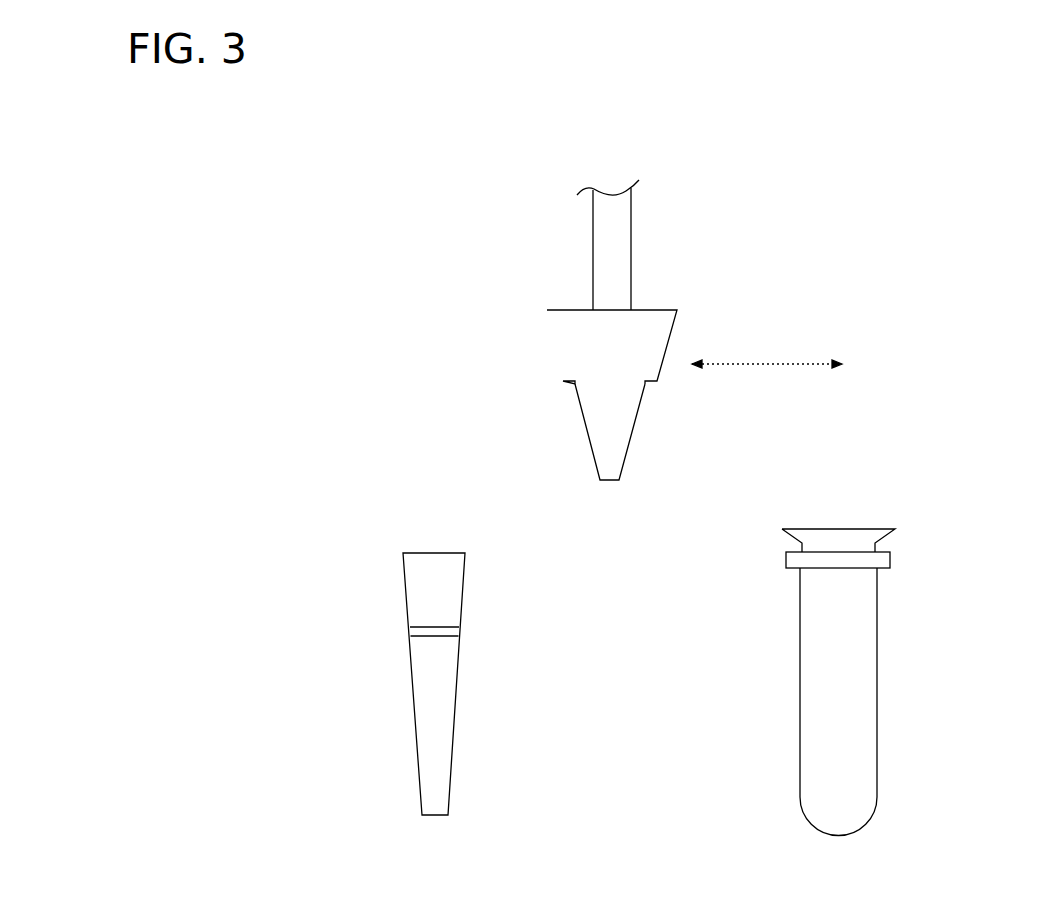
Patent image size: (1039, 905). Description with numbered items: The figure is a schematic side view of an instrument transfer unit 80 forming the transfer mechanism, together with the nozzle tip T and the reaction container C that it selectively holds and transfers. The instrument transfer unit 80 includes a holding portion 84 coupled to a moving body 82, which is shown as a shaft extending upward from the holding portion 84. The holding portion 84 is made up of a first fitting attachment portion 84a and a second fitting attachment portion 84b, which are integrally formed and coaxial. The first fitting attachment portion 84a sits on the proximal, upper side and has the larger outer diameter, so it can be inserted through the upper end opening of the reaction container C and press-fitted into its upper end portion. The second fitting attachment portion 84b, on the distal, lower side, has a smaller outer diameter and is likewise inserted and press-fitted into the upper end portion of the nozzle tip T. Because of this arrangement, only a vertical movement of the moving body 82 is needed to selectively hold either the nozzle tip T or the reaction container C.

The instrument transfer unit 80 is at (585, 168).
The moving body 82 is at (610, 250).
The holding portion 84 is at (571, 308).
The first fitting attachment portion 84a is at (570, 346).
The second fitting attachment portion 84b is at (617, 420).
The nozzle tip T is at (378, 605).
The reaction container C is at (938, 608).